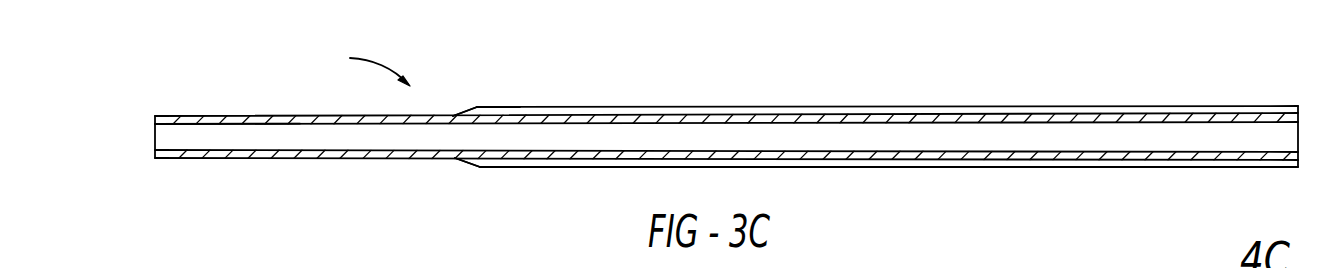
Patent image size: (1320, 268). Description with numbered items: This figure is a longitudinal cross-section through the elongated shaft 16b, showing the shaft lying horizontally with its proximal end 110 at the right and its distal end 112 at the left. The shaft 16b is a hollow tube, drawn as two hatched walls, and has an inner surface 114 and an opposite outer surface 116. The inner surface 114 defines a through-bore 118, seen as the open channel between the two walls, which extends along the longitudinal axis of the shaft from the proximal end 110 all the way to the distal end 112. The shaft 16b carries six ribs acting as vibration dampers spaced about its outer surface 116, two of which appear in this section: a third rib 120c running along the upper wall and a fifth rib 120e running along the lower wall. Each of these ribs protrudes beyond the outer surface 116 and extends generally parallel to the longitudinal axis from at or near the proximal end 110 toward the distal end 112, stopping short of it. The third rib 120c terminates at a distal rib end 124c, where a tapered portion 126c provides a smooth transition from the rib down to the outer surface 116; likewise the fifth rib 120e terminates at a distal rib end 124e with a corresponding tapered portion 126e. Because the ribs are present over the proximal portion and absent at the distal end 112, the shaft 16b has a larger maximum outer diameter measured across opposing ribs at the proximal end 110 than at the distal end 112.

The proximal end 110 is at (1299, 115).
The distal end 112 is at (155, 117).
The inner surface 114 is at (183, 124).
The outer surface 116 is at (262, 116).
The through-bore 118 is at (176, 152).
The elongated shaft 16b is at (361, 64).
The third rib 120c is at (877, 106).
The fifth rib 120e is at (968, 167).
The distal rib end 124c is at (453, 115).
The tapered portion 126c is at (472, 107).
The distal rib end 124e is at (455, 158).
The tapered portion 126e is at (462, 160).